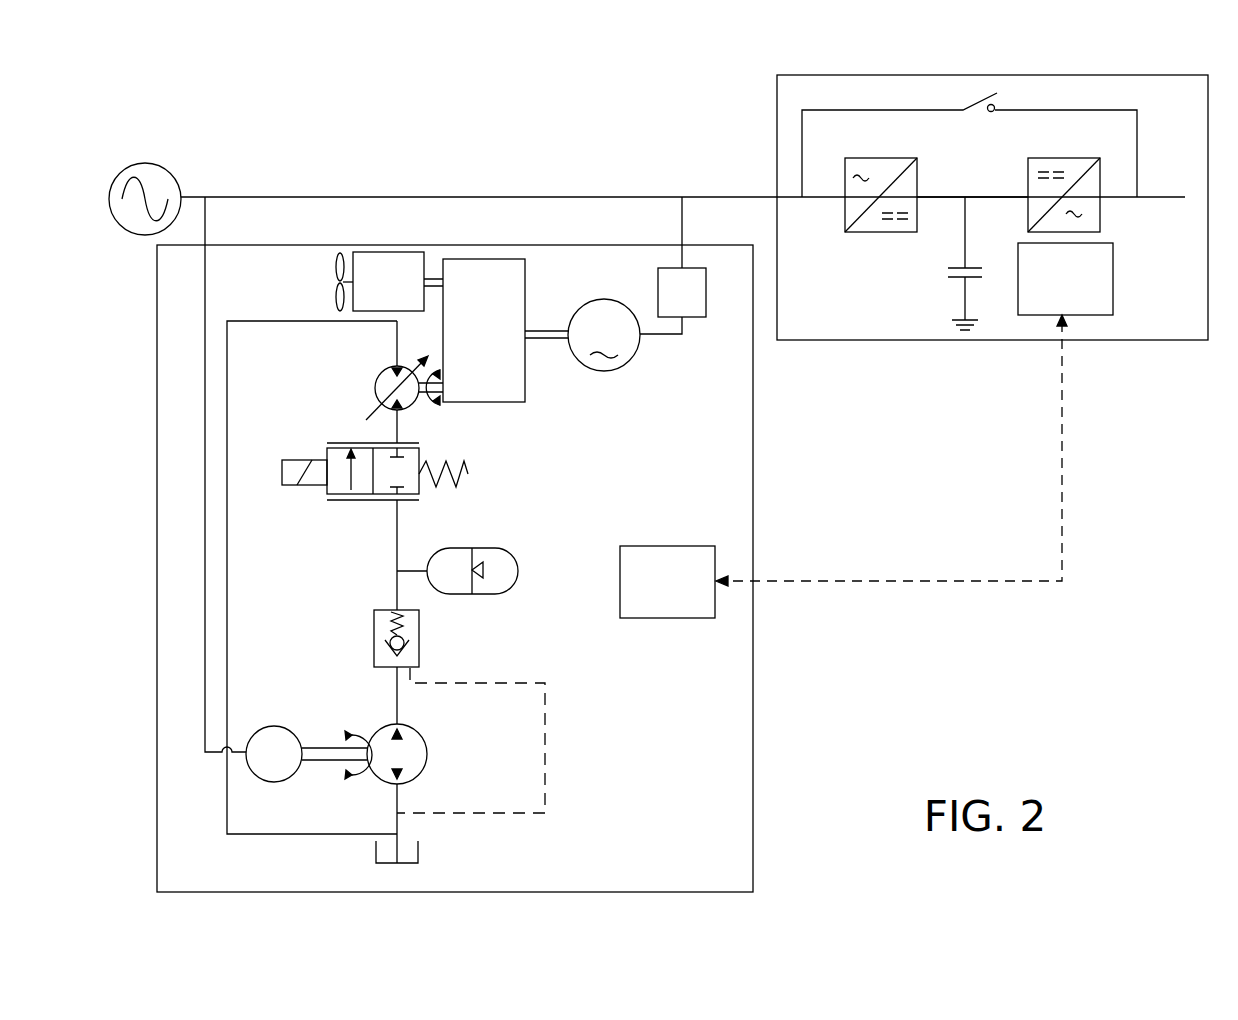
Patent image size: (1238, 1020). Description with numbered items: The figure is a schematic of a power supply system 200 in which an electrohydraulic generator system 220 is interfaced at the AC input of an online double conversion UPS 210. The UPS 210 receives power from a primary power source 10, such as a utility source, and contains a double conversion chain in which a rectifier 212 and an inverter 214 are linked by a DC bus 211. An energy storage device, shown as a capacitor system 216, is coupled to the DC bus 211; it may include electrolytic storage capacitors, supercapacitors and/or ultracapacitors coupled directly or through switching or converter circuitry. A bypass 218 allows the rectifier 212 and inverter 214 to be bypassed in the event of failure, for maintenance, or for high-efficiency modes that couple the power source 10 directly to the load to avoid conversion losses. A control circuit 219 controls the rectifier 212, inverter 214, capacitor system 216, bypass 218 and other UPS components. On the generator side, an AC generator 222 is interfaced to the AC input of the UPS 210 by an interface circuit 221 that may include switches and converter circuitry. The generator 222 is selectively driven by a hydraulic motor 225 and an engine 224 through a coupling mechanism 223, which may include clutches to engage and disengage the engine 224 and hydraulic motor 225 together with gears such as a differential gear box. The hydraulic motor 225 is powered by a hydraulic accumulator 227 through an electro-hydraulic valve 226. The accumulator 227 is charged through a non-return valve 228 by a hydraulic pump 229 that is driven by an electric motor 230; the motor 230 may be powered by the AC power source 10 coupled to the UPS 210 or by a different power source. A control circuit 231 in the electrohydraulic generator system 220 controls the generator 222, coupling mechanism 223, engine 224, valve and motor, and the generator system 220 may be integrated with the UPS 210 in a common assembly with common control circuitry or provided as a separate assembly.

The primary power source 10 is at (145, 162).
The power supply system 200 is at (1040, 630).
The online double conversion UPS 210 is at (993, 75).
The DC bus 211 is at (948, 193).
The rectifier 212 is at (883, 158).
The inverter 214 is at (1045, 158).
The capacitor system 216 is at (926, 272).
The bypass 218 is at (1012, 94).
The control circuit 219 is at (1113, 277).
The electrohydraulic generator system 220 is at (455, 245).
The interface circuit 221 is at (658, 292).
The AC generator 222 is at (604, 299).
The coupling mechanism 223 is at (483, 402).
The engine 224 is at (388, 252).
The hydraulic motor 225 is at (375, 389).
The electro-hydraulic valve 226 is at (282, 473).
The hydraulic accumulator 227 is at (490, 548).
The non-return valve 228 is at (374, 643).
The hydraulic pump 229 is at (427, 757).
The electric motor 230 is at (275, 726).
The control circuit 231 is at (668, 546).